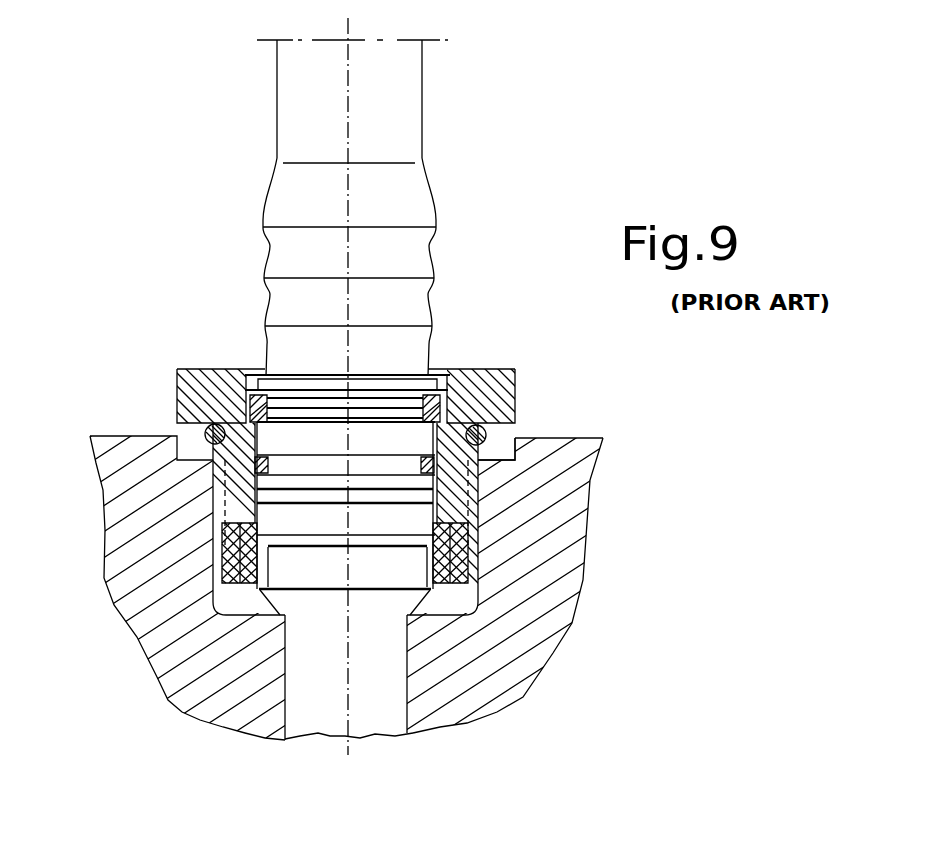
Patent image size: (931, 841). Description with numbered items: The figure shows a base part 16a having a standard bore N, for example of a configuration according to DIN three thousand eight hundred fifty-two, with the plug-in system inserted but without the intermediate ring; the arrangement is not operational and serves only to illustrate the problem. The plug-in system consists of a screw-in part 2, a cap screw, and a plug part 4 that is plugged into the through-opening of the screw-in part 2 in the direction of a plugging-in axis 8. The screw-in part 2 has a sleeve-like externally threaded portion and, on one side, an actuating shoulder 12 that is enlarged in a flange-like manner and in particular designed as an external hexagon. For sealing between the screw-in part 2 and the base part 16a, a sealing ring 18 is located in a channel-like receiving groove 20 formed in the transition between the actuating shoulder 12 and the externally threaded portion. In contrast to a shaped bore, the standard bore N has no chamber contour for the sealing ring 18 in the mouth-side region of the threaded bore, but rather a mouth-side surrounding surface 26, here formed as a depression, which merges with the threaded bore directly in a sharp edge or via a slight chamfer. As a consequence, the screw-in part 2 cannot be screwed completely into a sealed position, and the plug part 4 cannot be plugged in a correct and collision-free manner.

The screw-in part 2 is at (489, 363).
The plug part 4 is at (291, 371).
The plugging-in axis 8 is at (348, 652).
The actuating shoulder 12 is at (498, 398).
The base part 16a is at (603, 432).
The sealing ring 18 is at (209, 424).
The receiving groove 20 is at (457, 425).
The mouth-side surrounding surface 26 is at (501, 453).
The standard bore N is at (462, 594).